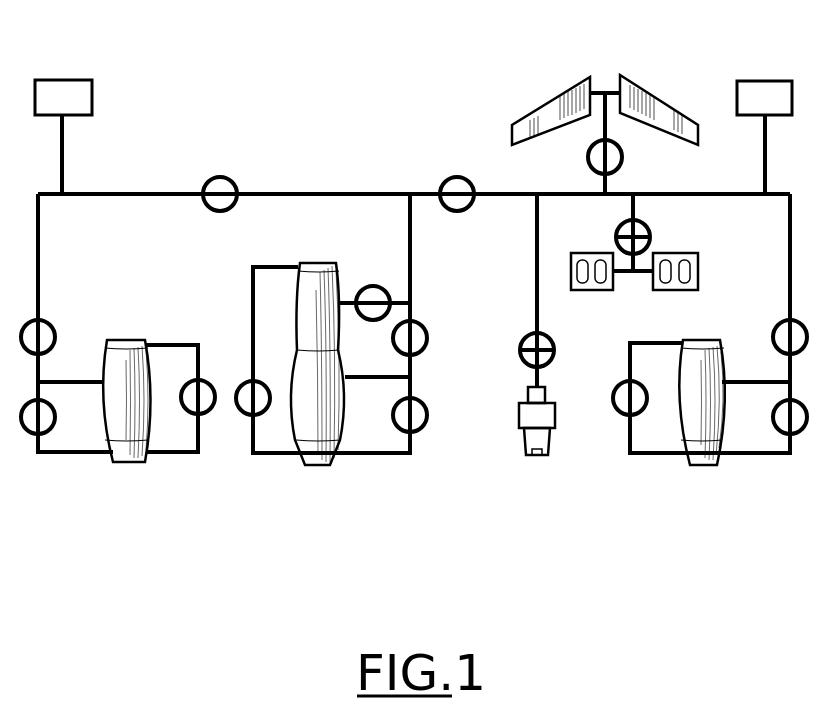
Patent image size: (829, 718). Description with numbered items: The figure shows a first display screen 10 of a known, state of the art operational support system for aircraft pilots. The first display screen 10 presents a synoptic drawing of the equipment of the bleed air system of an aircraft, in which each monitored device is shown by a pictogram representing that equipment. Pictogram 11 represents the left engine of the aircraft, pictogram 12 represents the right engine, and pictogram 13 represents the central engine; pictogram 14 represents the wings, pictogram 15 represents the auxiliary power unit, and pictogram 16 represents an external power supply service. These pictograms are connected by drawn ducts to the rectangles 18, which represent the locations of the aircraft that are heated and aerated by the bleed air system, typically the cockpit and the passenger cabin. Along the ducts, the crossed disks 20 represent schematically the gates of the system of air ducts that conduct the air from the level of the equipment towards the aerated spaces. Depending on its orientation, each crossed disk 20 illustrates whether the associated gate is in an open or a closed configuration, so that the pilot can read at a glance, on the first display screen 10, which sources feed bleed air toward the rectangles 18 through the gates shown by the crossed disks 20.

The first display screen 10 is at (50, 490).
The pictogram of the left engine 11 is at (128, 465).
The pictogram of the right engine 12 is at (700, 467).
The pictogram of the central engine 13 is at (318, 466).
The pictogram of the wings 14 is at (660, 108).
The pictogram of the auxiliary power unit 15 is at (537, 457).
The pictogram of the external power supply service 16 is at (698, 271).
The rectangles 18 is at (62, 80).
The crossed disks 20 is at (230, 178).